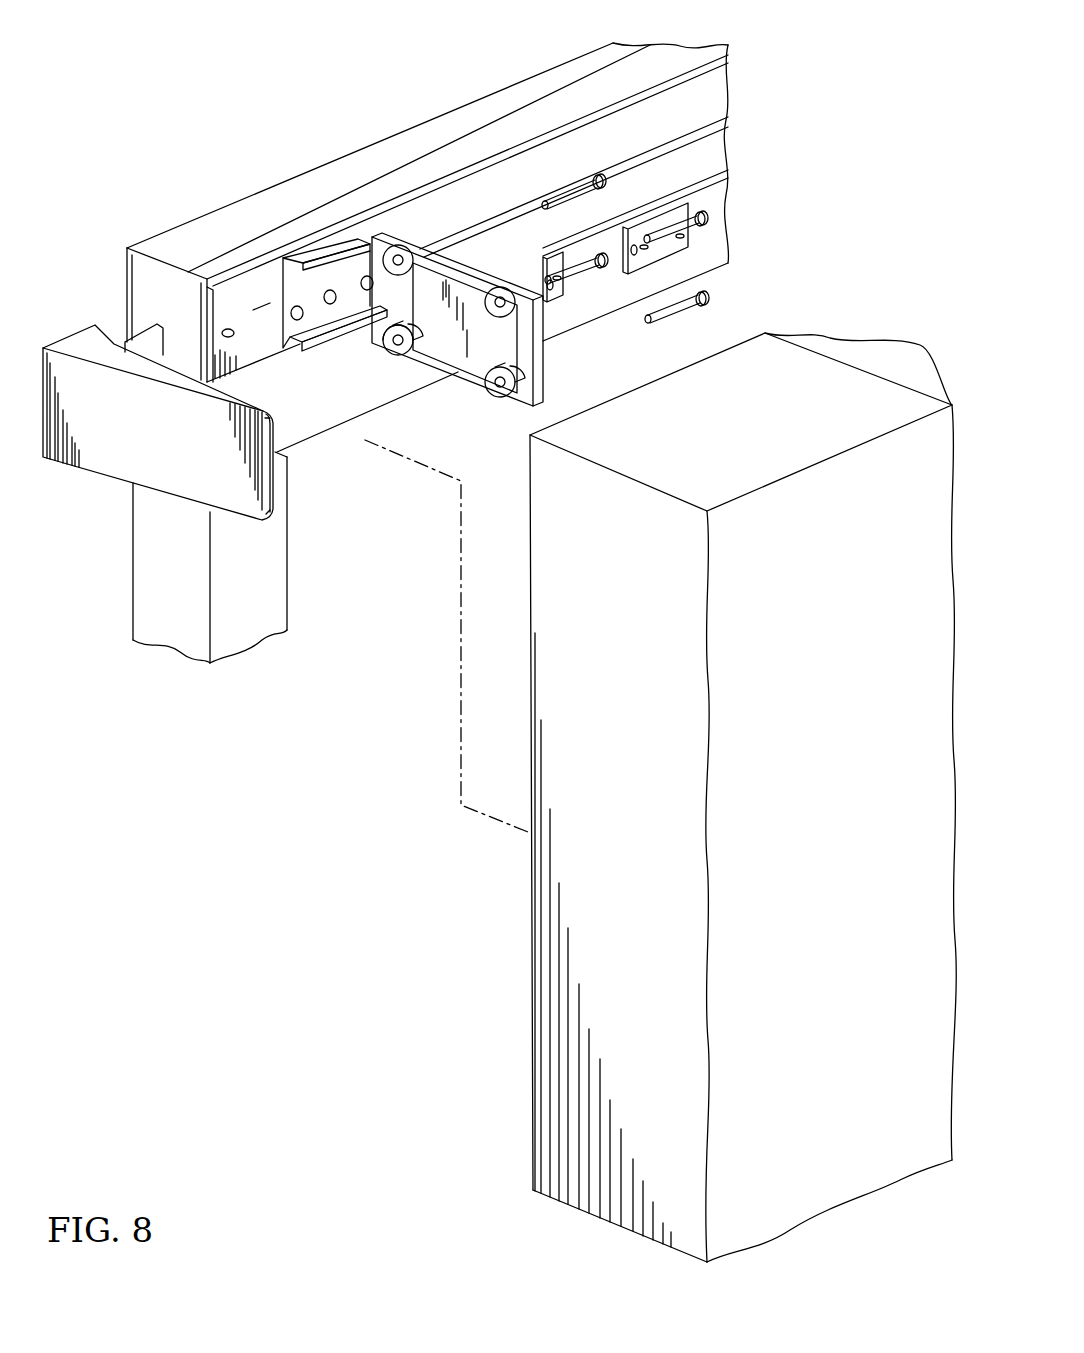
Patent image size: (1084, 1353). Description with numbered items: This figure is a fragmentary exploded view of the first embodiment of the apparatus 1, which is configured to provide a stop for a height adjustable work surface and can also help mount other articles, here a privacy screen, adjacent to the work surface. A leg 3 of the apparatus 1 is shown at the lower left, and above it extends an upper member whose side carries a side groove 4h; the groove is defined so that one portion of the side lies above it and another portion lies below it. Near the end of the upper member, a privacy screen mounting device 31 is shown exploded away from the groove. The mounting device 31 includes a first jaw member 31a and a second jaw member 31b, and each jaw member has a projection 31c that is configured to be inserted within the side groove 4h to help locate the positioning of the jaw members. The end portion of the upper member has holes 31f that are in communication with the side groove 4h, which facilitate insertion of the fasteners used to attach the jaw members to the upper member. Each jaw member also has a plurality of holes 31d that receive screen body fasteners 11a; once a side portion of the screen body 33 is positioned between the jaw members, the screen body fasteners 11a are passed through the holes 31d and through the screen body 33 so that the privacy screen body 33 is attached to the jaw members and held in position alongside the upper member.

The apparatus 1 is at (375, 538).
The leg 3 is at (157, 594).
The side groove 4h is at (480, 228).
The screen body fastener 11a is at (680, 308).
The privacy screen mounting device 31 is at (95, 305).
The first jaw member 31a is at (258, 495).
The second jaw member 31b is at (505, 385).
The projection 31c is at (253, 310).
The holes 31d is at (405, 277).
The holes 31f is at (367, 280).
The privacy screen body 33 is at (542, 1072).